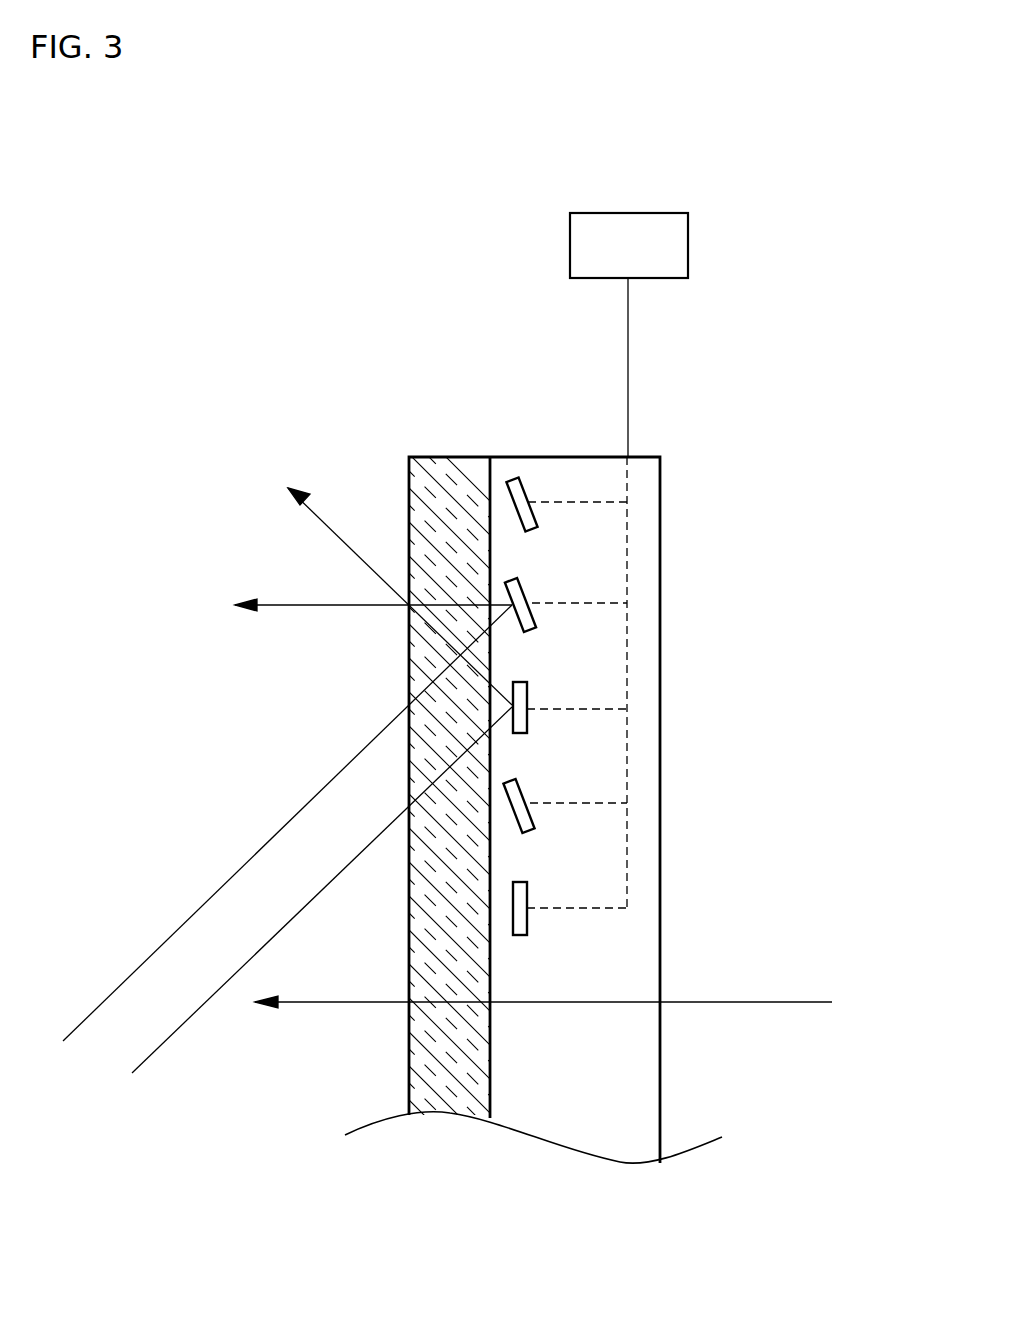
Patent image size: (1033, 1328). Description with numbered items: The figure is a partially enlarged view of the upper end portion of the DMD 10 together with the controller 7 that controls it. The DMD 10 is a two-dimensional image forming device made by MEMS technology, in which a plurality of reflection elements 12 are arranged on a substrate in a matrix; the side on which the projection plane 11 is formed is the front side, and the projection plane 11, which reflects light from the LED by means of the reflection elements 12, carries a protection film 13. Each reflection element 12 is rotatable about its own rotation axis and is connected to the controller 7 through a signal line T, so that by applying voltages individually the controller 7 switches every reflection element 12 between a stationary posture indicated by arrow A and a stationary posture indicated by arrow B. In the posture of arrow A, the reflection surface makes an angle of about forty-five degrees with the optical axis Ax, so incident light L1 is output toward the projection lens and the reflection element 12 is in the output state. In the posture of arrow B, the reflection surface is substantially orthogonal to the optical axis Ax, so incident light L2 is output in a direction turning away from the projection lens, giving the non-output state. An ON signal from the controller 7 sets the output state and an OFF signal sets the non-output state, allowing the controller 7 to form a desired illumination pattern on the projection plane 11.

The controller 7 is at (647, 213).
The DMD 10 is at (681, 381).
The projection plane 11 is at (478, 478).
The reflection element 12 is at (532, 518).
The protection film 13 is at (440, 477).
The signal line T is at (628, 340).
The arrow A is at (527, 587).
The arrow B is at (528, 691).
The light L1 is at (180, 925).
The light L2 is at (195, 1012).
The optical axis Ax is at (543, 1018).